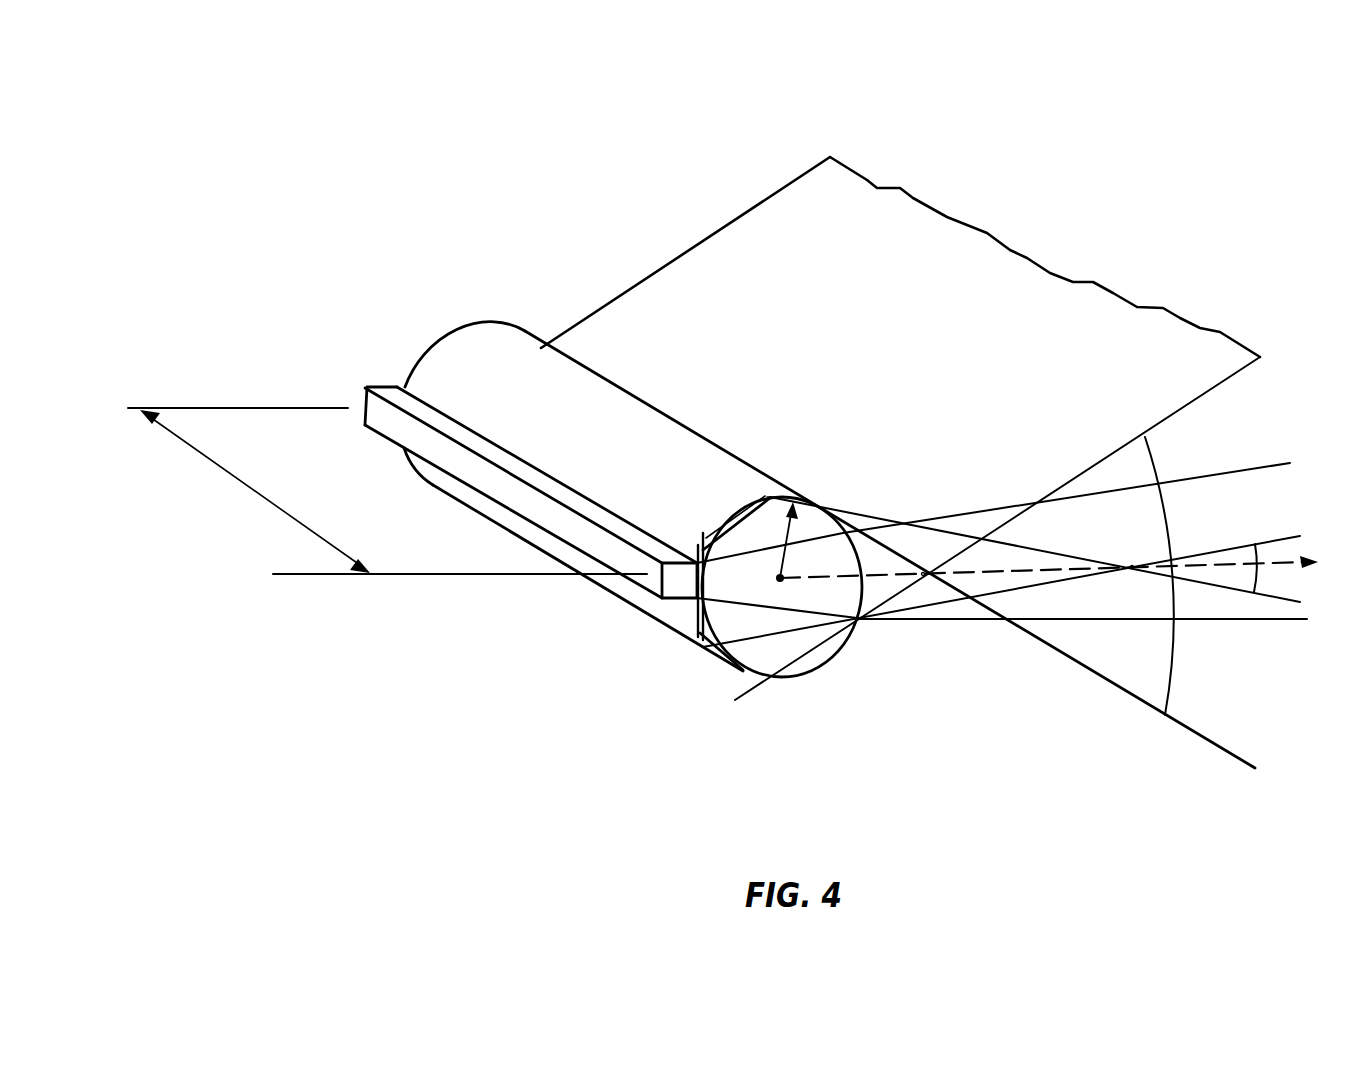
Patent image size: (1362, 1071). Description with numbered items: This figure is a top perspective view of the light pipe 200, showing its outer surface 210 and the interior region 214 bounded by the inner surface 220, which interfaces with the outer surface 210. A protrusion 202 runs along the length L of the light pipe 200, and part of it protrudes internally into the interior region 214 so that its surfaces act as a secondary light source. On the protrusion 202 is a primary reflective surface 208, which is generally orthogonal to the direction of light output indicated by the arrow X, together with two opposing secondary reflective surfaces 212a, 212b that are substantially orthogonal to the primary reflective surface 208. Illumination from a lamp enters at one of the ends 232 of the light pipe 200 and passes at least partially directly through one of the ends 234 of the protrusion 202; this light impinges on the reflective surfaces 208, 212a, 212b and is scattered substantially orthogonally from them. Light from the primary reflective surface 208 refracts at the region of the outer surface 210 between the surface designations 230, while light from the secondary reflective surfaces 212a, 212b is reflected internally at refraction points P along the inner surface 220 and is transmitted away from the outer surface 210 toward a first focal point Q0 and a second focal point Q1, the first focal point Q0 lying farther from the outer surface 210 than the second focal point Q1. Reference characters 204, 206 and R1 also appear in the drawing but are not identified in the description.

The light pipe 200 is at (1176, 166).
The protrusion 202 is at (397, 417).
The cylindrical lens 204 is at (610, 397).
The light source surface 206 is at (627, 546).
The primary reflective surface 208 is at (710, 645).
The outer surface 210 is at (667, 433).
The secondary reflective surface 212a is at (697, 557).
The secondary reflective surface 212b is at (695, 620).
The interior region 214 is at (787, 620).
The inner surface 220 is at (870, 563).
The surface designations 230 is at (860, 568).
The ends of the light pipe 232 is at (428, 330).
The ends of the protrusion 234 is at (366, 390).
The refraction points P is at (767, 496).
The lens radius R1 is at (723, 660).
The second focal point Q1 is at (923, 567).
The first focal point Q0 is at (1130, 563).
The length L is at (387, 491).
The arrow indicating direction of light output X is at (1063, 581).